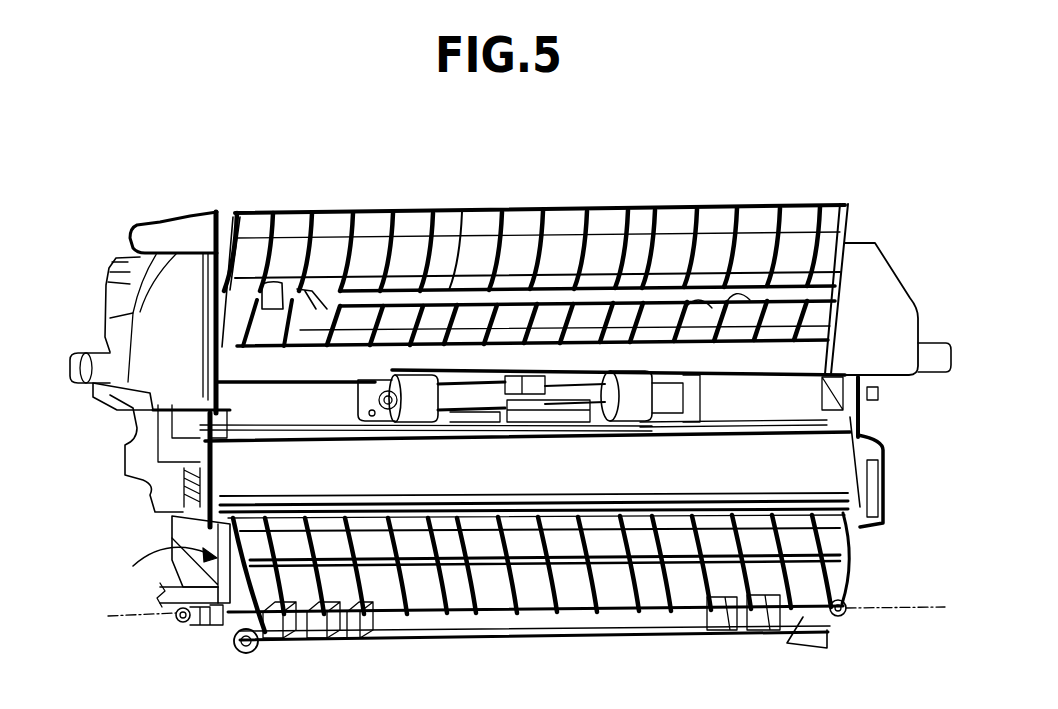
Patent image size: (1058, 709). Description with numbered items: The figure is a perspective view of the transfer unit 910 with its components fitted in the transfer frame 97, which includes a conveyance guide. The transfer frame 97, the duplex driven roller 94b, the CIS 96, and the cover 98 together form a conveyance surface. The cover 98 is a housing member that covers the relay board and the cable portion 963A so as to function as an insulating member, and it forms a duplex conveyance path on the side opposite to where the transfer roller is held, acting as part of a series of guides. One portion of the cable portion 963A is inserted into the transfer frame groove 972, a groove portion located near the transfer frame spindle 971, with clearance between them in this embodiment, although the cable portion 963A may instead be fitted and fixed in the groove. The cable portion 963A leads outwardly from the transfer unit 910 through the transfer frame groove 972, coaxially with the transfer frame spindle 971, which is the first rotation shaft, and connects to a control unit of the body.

The duplex driven roller 94b is at (420, 385).
The transfer frame 97 is at (568, 248).
The transfer unit 910 is at (717, 208).
The CIS 96 is at (827, 472).
The cable portion 963A is at (187, 595).
The transfer frame spindle 971 is at (178, 618).
The transfer frame groove 972 is at (232, 652).
The cover 98 is at (495, 597).